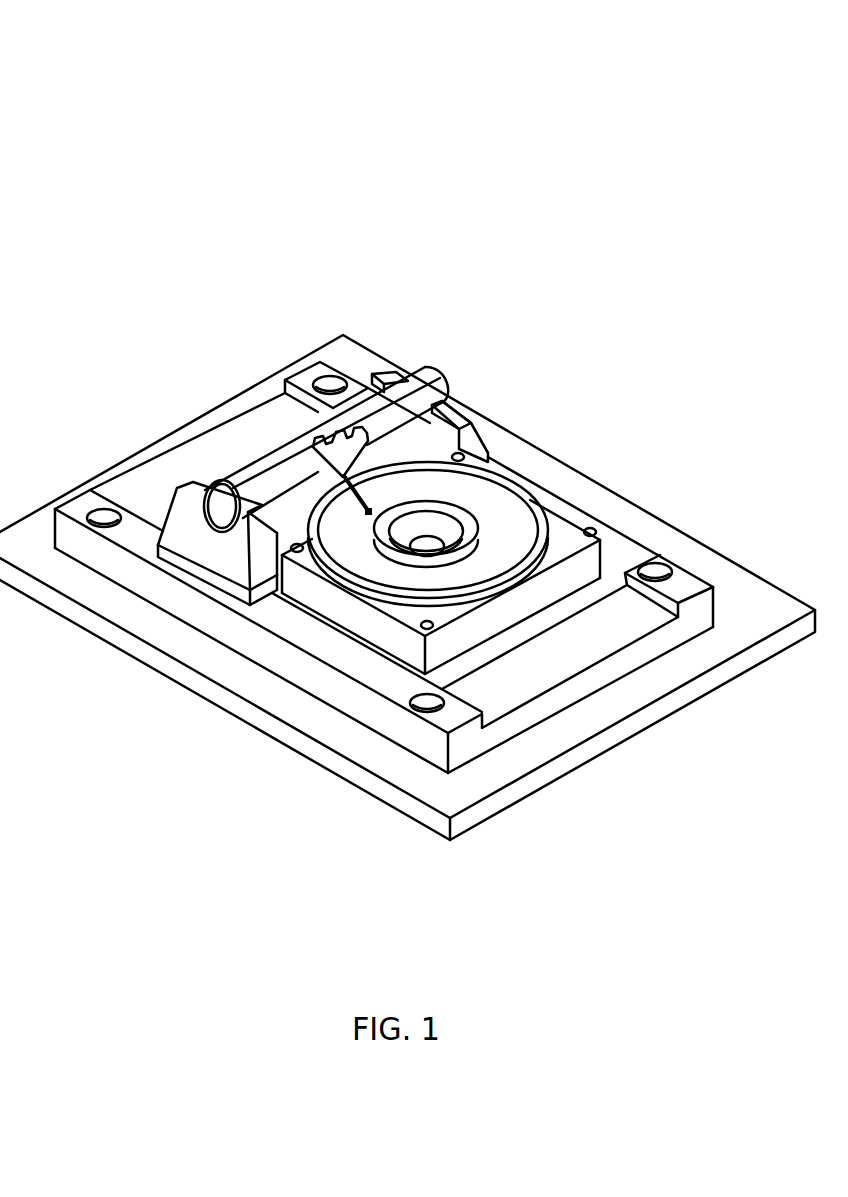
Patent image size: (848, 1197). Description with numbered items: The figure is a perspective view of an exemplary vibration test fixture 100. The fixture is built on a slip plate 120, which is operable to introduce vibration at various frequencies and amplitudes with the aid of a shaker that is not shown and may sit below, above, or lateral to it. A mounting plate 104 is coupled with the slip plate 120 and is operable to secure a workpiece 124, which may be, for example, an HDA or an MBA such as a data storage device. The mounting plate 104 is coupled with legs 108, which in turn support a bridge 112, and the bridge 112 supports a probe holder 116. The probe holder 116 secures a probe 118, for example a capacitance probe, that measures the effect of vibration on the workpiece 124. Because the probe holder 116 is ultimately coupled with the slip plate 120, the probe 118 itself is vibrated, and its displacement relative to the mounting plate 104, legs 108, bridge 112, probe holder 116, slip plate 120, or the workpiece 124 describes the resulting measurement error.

The vibration test fixture 100 is at (70, 80).
The mounting plate 104 is at (470, 745).
The legs 108 is at (212, 549).
The bridge 112 is at (253, 490).
The probe holder 116 is at (372, 512).
The probe 118 is at (477, 448).
The slip plate 120 is at (385, 762).
The workpiece 124 is at (556, 535).